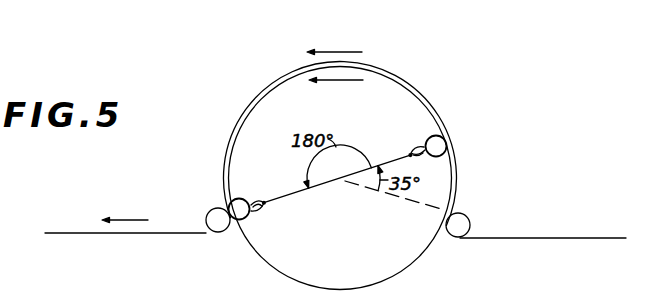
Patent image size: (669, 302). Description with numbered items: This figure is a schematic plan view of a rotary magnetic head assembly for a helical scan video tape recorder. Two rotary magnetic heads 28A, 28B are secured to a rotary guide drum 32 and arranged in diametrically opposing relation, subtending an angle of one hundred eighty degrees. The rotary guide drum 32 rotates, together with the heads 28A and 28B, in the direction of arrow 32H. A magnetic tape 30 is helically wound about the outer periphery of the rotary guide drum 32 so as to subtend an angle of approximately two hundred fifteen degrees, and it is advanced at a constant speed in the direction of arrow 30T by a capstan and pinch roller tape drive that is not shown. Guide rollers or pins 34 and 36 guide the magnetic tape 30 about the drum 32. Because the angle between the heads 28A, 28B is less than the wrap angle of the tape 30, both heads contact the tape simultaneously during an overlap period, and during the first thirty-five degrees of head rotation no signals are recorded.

The magnetic tape 30 is at (238, 114).
The arrow indicating tape advance direction 30T is at (355, 41).
The rotary guide drum 32 is at (223, 154).
The arrow indicating drum rotation direction 32H is at (321, 82).
The rotary magnetic head 28A is at (248, 219).
The rotary magnetic head 28B is at (432, 138).
The guide roller 34 is at (218, 228).
The guide roller 36 is at (457, 234).